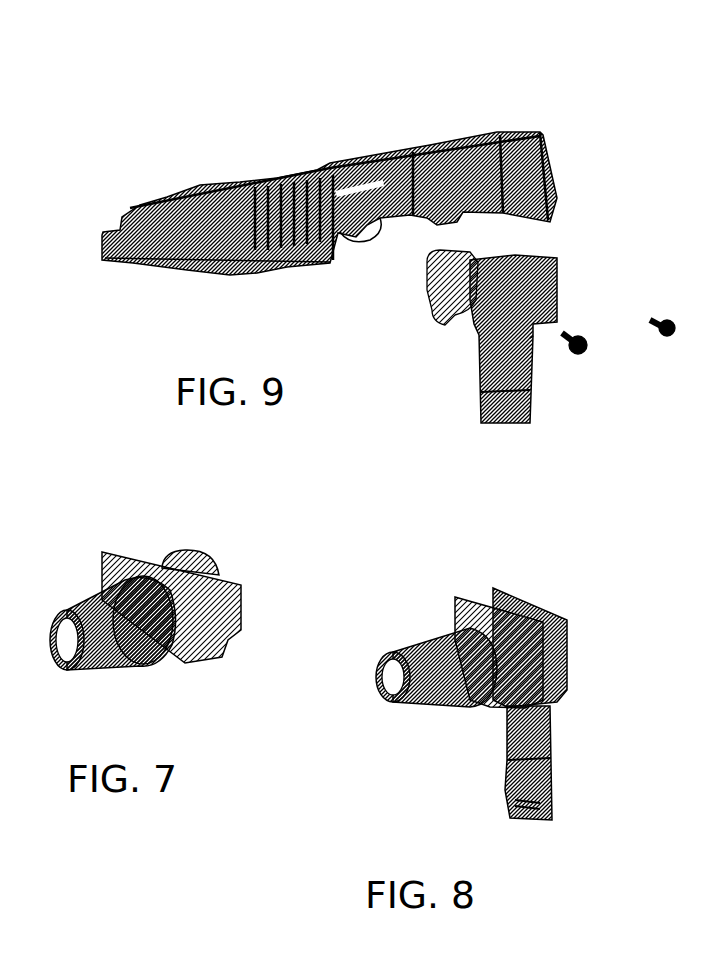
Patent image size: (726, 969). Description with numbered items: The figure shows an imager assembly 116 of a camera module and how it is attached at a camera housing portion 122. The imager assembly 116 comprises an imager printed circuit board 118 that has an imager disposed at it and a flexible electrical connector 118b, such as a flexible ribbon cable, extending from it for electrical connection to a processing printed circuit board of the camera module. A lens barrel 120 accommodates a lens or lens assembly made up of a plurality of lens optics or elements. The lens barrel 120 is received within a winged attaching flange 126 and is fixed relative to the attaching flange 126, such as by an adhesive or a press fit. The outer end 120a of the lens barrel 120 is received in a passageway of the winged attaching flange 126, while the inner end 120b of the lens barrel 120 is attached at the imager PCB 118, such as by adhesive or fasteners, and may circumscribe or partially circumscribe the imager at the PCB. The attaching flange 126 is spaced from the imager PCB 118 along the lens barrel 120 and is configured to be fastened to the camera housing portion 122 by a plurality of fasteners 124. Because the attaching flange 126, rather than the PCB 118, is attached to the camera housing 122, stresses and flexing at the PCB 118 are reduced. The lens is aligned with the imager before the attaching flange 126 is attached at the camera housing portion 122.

In FIG. 9, the imager assembly 116 is at (457, 372).
In FIG. 8, the imager assembly 116 is at (482, 687).
In FIG. 8, the imager printed circuit board 118 is at (585, 704).
In FIG. 8, the flexible electrical connector 118b is at (543, 745).
In FIG. 8, the lens barrel 120 is at (433, 638).
In FIG. 7, the outer end of the lens barrel 120a is at (115, 640).
In FIG. 7, the inner end of the lens barrel 120b is at (200, 557).
In FIG. 9, the camera housing portion 122 is at (360, 155).
In FIG. 9, the fasteners 124 is at (583, 350).
In FIG. 9, the winged attaching flange 126 is at (440, 300).
In FIG. 7, the winged attaching flange 126 is at (112, 557).
In FIG. 8, the winged attaching flange 126 is at (453, 607).